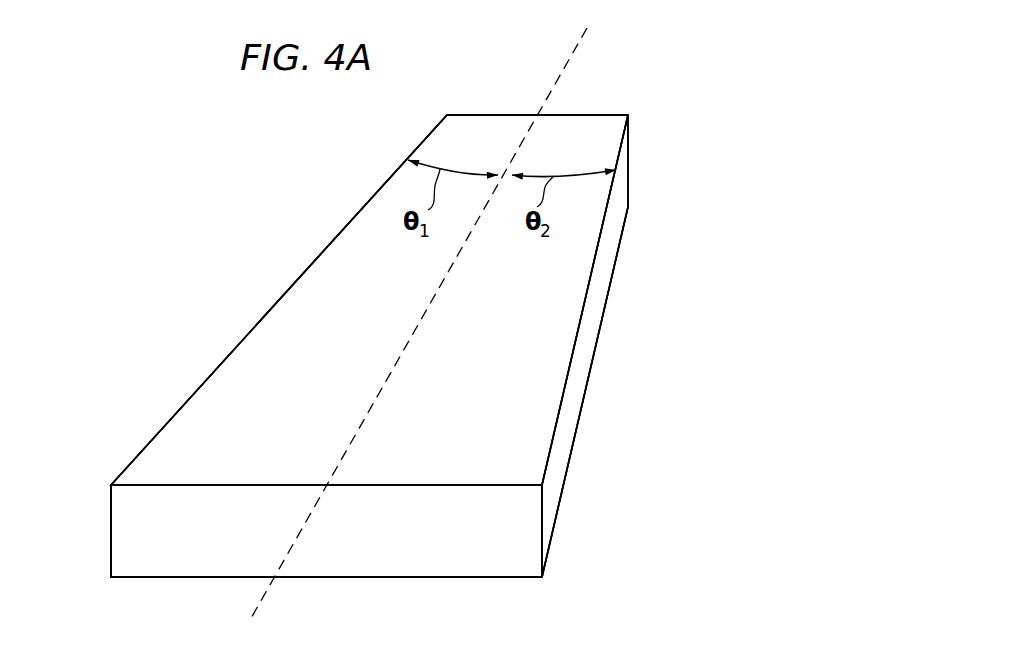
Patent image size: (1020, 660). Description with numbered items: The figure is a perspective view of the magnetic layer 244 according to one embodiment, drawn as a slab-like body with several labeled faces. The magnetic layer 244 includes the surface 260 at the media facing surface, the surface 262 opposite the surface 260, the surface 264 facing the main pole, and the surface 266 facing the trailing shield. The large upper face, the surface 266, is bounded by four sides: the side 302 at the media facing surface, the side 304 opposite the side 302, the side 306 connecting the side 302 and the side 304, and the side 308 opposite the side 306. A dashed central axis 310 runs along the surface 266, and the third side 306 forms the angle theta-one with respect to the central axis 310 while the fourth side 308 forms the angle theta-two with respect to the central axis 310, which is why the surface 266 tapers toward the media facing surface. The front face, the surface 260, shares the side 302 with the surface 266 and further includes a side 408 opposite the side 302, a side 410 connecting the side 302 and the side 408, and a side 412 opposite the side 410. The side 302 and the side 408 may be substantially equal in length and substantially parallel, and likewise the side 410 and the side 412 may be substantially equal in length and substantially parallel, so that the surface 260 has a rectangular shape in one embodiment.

The magnetic layer 244 is at (230, 310).
The surface 260 is at (395, 538).
The surface 262 is at (628, 138).
The surface 264 is at (557, 522).
The surface 266 is at (524, 303).
The side 302 is at (443, 488).
The side 304 is at (483, 114).
The side 306 is at (323, 250).
The side 308 is at (572, 358).
The central axis 310 is at (575, 52).
The side 408 is at (193, 578).
The side 410 is at (111, 521).
The side 412 is at (543, 492).